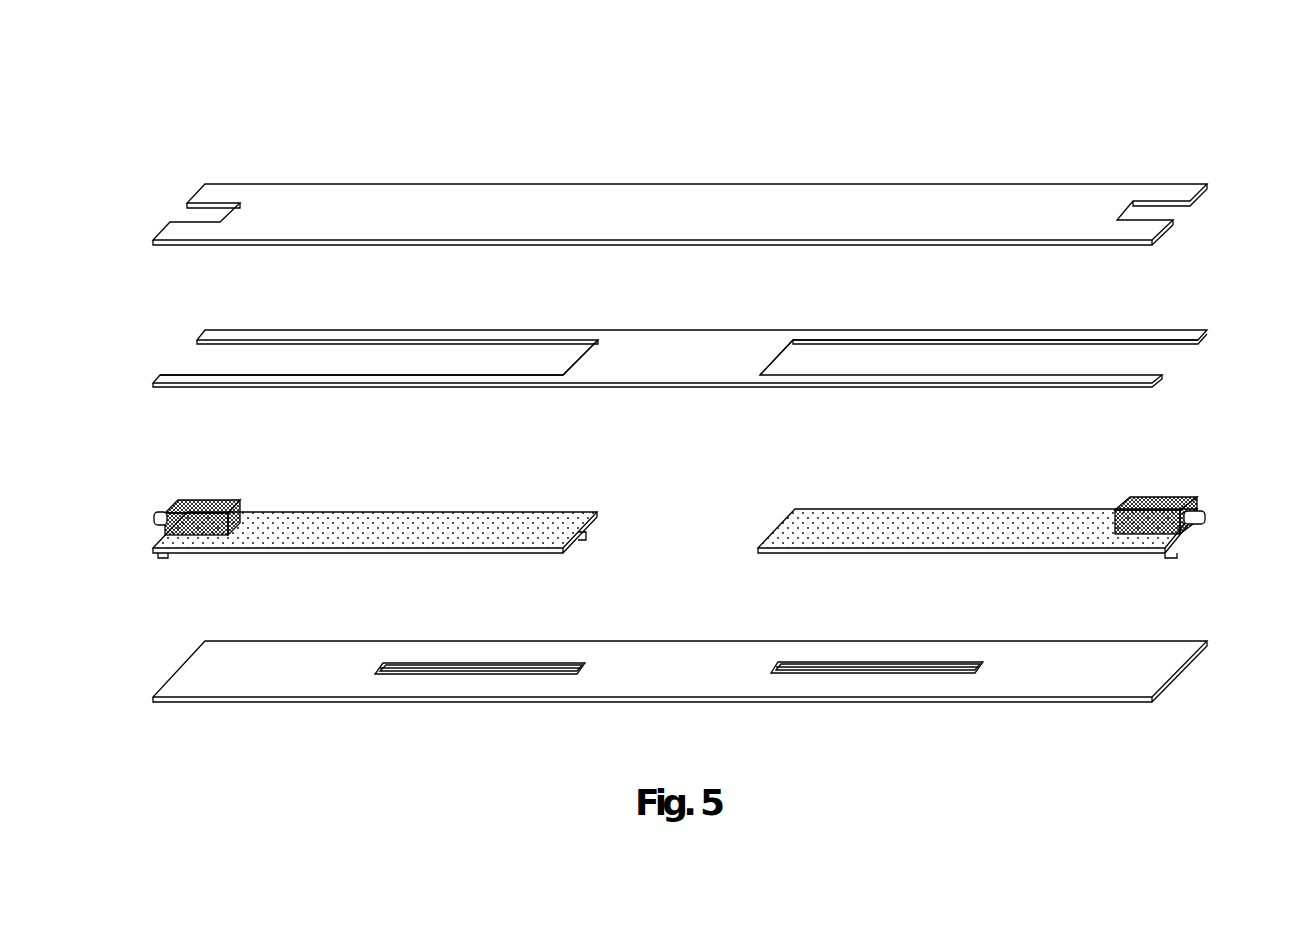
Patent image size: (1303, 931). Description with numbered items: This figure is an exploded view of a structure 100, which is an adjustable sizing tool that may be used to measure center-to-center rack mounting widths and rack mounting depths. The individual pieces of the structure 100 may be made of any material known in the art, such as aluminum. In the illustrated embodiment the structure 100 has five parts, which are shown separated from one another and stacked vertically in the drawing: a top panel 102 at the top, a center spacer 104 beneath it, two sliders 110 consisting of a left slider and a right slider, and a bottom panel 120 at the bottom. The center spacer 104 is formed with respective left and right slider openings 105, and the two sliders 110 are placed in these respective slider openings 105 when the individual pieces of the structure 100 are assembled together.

The structure 100 is at (145, 100).
The top panel 102 is at (695, 221).
The center spacer 104 is at (695, 368).
The slider openings 105 is at (176, 360).
The sliders 110 is at (180, 480).
The bottom panel 120 is at (695, 678).